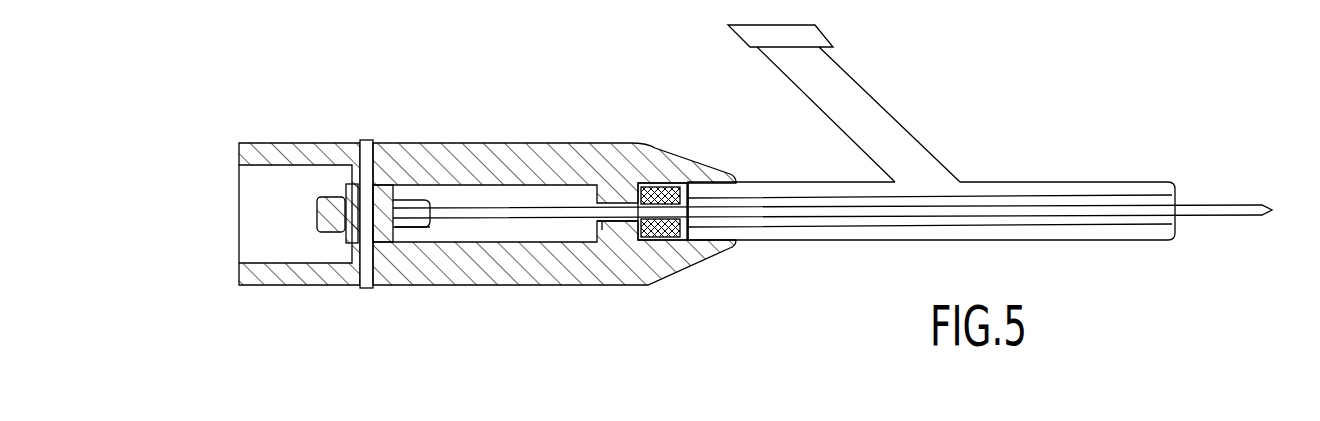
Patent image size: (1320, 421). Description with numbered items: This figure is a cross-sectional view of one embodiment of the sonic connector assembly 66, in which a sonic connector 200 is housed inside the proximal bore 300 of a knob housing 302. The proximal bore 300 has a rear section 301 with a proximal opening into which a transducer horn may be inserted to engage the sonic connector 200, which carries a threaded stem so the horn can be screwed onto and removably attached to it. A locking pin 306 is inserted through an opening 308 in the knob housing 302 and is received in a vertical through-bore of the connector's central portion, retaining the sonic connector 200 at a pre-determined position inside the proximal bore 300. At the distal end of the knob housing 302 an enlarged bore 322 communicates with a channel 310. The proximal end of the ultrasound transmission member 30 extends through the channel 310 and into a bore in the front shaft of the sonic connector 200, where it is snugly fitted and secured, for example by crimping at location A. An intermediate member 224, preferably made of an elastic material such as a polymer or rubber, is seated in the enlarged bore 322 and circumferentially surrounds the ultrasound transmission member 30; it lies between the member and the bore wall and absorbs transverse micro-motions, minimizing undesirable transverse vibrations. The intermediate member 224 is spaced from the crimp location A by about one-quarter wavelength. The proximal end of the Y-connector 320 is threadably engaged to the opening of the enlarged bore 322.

The sonic connector assembly 66 is at (262, 104).
The rear section 301 is at (262, 229).
The sonic connector 200 is at (327, 251).
The opening 308 is at (372, 143).
The locking pin 306 is at (366, 285).
The knob housing 302 is at (486, 150).
The proximal bore 300 is at (515, 228).
The crimp location A is at (424, 245).
The channel 310 is at (615, 222).
The enlarged bore 322 is at (673, 183).
The intermediate member 224 is at (660, 186).
The Y-connector 320 is at (790, 240).
The ultrasound transmission member 30 is at (1224, 219).